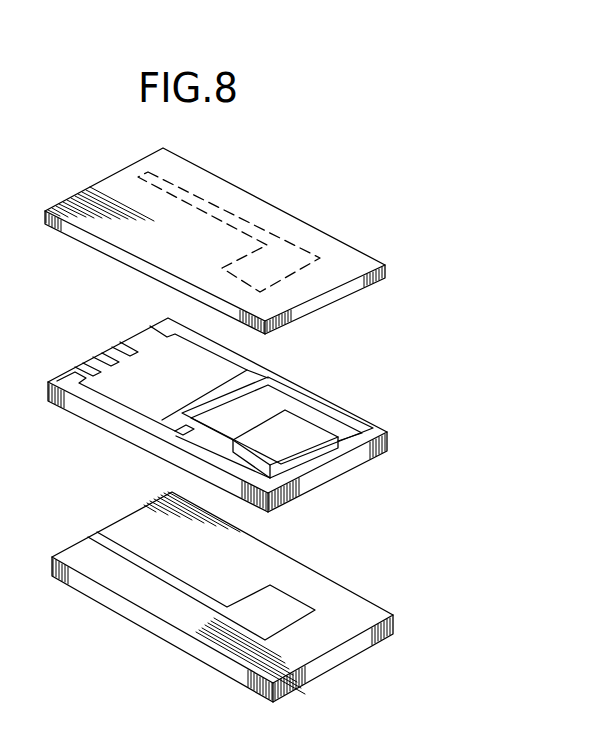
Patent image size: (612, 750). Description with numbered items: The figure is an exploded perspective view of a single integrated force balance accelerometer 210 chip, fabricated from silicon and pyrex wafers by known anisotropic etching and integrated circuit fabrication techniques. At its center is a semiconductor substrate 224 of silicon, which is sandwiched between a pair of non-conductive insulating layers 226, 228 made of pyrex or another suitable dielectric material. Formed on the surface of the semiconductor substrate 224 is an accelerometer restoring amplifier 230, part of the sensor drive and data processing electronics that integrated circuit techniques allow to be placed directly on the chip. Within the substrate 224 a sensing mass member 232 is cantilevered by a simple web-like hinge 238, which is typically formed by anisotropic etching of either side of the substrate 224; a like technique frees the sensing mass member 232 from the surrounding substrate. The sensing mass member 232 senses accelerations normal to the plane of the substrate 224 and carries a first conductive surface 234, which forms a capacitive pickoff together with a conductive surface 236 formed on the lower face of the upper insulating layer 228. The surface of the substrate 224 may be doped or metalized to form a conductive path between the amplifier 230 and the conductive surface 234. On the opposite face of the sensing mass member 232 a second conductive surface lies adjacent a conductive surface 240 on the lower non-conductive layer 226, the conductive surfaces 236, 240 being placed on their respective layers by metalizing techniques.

The force balance accelerometer 210 is at (272, 171).
The semiconductor substrate 224 is at (308, 485).
The lower non-conductive insulating layer 226 is at (212, 662).
The upper insulating layer 228 is at (338, 297).
The accelerometer restoring amplifier 230 is at (150, 368).
The sensing mass member 232 is at (320, 450).
The first conductive surface 234 is at (303, 430).
The conductive surface 236 is at (277, 243).
The web-like hinge 238 is at (178, 428).
The conductive surface 240 is at (280, 597).